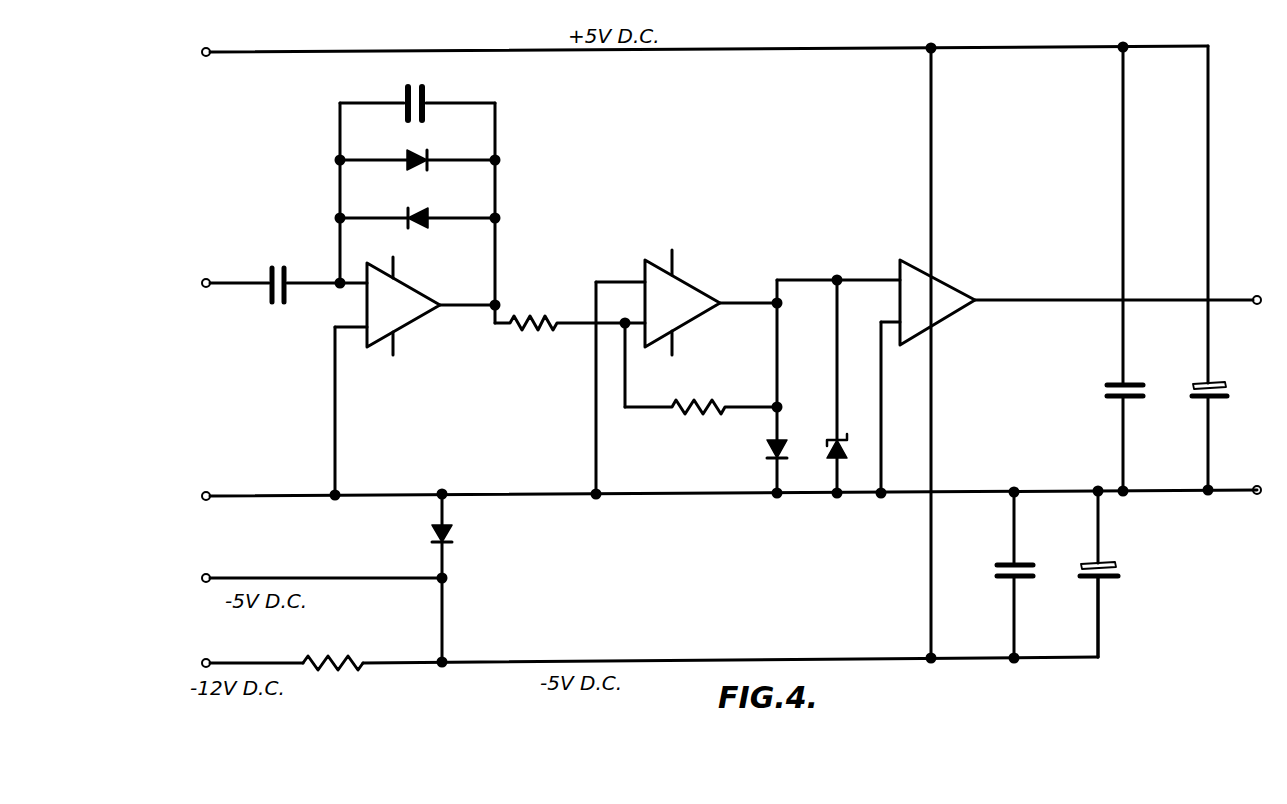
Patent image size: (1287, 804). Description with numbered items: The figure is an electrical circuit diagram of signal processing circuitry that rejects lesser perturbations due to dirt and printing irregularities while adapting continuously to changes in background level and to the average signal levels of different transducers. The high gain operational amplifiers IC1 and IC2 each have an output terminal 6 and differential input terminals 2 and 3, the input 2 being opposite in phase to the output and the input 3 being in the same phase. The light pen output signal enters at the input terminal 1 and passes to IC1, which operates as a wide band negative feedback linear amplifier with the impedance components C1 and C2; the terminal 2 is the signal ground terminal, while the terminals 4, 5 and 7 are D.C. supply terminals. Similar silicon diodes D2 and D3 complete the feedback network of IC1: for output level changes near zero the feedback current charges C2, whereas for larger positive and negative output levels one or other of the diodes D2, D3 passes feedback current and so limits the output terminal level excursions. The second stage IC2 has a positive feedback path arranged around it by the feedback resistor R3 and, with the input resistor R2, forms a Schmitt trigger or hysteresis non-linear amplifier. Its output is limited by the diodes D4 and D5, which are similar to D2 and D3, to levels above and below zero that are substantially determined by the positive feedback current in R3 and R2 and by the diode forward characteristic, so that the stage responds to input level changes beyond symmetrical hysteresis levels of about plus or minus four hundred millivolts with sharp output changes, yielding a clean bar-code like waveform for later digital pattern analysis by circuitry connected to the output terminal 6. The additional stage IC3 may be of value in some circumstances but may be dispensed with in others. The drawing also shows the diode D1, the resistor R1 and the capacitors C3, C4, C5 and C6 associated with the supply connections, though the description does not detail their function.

The impedance component C1 is at (270, 275).
The impedance component C2 is at (405, 97).
The decoupling capacitor 10n C3 is at (1000, 578).
The electrolytic decoupling capacitor 100μ C4 is at (1086, 567).
The decoupling capacitor 10n C5 is at (1117, 400).
The electrolytic decoupling capacitor 100μ C6 is at (1196, 387).
The diode D1 is at (459, 530).
The silicon diode D2 is at (406, 157).
The silicon diode D3 is at (420, 211).
The diode D4 is at (769, 451).
The diode D5 is at (830, 452).
The resistor 470 ohm R1 is at (352, 672).
The input resistor R2 is at (552, 334).
The positive feedback resistor R3 is at (718, 416).
The high gain operational amplifier IC1 is at (415, 373).
The high gain operational amplifier IC2 is at (688, 351).
The additional stage IC3 is at (929, 369).
The input terminal 1 is at (217, 283).
The signal ground terminal 2 is at (187, 495).
The differential input terminal 3 is at (1270, 489).
The D.C. supply terminal 4 is at (187, 52).
The D.C. supply terminal 5 is at (234, 662).
The output terminal 6 is at (1131, 300).
The D.C. supply terminal 7 is at (303, 577).